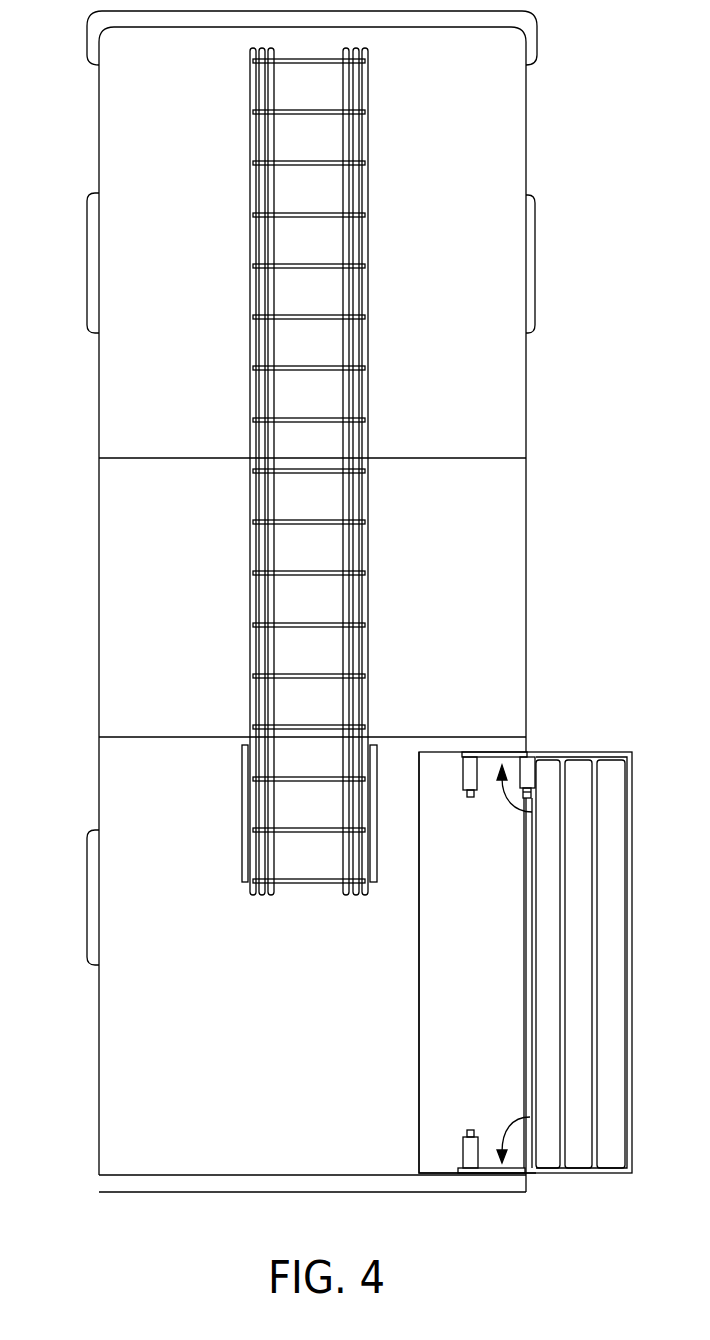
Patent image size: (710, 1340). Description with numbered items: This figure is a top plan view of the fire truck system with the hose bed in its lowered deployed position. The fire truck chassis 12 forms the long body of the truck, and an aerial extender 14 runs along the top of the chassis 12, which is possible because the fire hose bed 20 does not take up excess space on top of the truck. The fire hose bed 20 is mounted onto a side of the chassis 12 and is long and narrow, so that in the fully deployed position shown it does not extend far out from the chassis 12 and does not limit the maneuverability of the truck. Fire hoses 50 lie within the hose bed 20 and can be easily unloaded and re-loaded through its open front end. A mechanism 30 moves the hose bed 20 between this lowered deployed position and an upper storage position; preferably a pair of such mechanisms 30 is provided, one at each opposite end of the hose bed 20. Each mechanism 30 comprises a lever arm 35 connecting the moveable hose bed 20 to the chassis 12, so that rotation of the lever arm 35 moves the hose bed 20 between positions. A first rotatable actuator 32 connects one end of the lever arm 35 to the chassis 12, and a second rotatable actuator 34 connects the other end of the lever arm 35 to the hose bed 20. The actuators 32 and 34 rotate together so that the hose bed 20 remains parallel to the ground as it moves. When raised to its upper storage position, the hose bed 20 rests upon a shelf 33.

The fire truck chassis 12 is at (134, 510).
The aerial extender 14 is at (252, 652).
The fire hose bed 20 is at (632, 848).
The mechanism 30 is at (532, 812).
The first rotatable actuator 32 is at (468, 777).
The shelf 33 is at (500, 990).
The second rotatable actuator 34 is at (533, 772).
The lever arm 35 is at (503, 752).
The fire hoses 50 is at (577, 923).